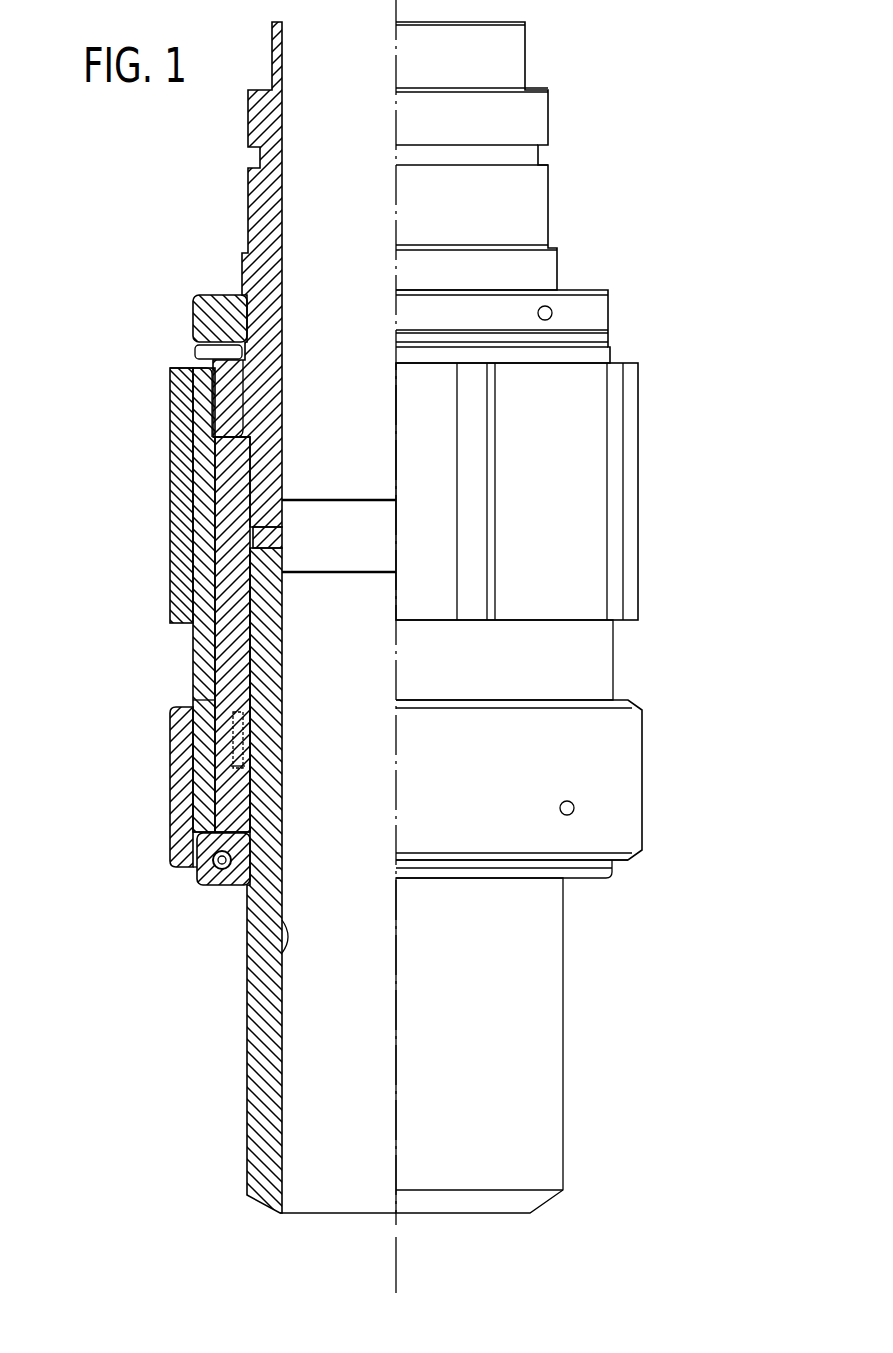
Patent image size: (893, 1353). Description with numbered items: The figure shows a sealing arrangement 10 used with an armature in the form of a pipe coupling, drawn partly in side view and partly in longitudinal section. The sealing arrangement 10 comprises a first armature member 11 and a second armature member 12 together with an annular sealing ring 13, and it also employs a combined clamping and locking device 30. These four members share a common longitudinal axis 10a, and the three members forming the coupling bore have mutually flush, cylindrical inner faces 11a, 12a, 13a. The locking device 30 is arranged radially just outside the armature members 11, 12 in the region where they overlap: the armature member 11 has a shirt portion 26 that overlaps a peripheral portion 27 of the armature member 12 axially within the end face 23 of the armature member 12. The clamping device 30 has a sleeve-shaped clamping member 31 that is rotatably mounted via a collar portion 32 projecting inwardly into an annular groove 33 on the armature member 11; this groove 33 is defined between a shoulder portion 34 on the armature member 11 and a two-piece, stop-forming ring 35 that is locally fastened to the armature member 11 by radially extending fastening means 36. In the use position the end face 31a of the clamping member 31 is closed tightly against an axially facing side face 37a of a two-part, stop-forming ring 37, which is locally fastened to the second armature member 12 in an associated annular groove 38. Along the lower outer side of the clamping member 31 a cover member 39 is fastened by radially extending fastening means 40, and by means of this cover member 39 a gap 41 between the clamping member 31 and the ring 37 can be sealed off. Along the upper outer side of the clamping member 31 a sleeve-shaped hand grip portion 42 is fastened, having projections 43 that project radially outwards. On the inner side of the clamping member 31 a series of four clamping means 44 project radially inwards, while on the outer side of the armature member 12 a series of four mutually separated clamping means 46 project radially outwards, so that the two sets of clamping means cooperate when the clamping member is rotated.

The sealing arrangement 10 is at (155, 434).
The common longitudinal axis 10a is at (396, 1267).
The first armature member 11 is at (520, 207).
The cylindrical inner face of first armature member 11a is at (282, 317).
The second armature member 12 is at (525, 1083).
The cylindrical inner face of second armature member 12a is at (283, 960).
The annular sealing ring 13 is at (200, 580).
The cylindrical inner face of sealing ring 13a is at (278, 522).
The end face 23 is at (252, 550).
The shirt portion 26 is at (228, 643).
The peripheral portion 27 is at (187, 705).
The combined clamping and locking device 30 is at (203, 552).
The sleeve-shaped clamping member 31 is at (203, 782).
The end face of clamping member 31a is at (197, 825).
The collar portion 32 is at (197, 355).
The annular groove 33 is at (243, 398).
The shoulder portion 34 is at (222, 442).
The two-piece stop-forming ring 35 is at (197, 320).
The radially extending fastening means 36 is at (553, 311).
The two-part stop-forming ring 37 is at (223, 885).
The axially facing side face 37a is at (233, 830).
The annular groove 38 is at (250, 860).
The cover member 39 is at (183, 757).
The radially extending fastening means 40 is at (578, 808).
The gap 41 is at (238, 790).
The sleeve-shaped hand grip portion 42 is at (183, 513).
The projections 43 is at (583, 588).
The clamping means 44 is at (250, 780).
The clamping means 46 is at (238, 738).